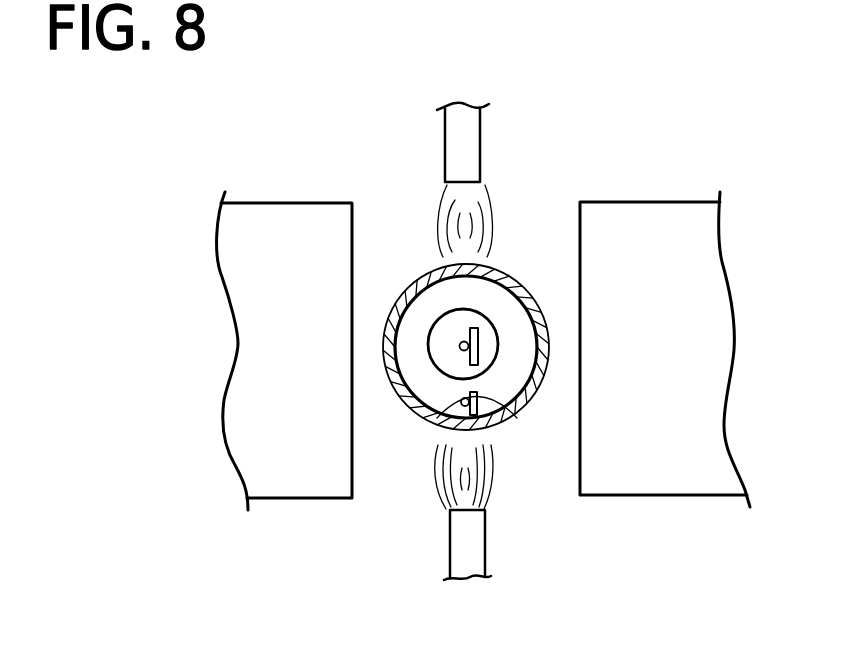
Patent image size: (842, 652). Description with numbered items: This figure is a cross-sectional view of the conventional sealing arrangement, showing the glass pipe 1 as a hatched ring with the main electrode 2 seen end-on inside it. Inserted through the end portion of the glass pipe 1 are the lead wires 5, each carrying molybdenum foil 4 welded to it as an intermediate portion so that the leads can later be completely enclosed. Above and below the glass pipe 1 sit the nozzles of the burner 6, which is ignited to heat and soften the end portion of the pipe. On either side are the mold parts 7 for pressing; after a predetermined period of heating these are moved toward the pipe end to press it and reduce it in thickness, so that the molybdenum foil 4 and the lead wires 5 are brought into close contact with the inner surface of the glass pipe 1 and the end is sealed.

The glass pipe 1 is at (518, 265).
The main electrode 2 is at (434, 321).
The molybdenum foil 4 is at (478, 338).
The lead wires 5 is at (460, 347).
The burner 6 is at (470, 145).
The mold parts 7 is at (292, 222).